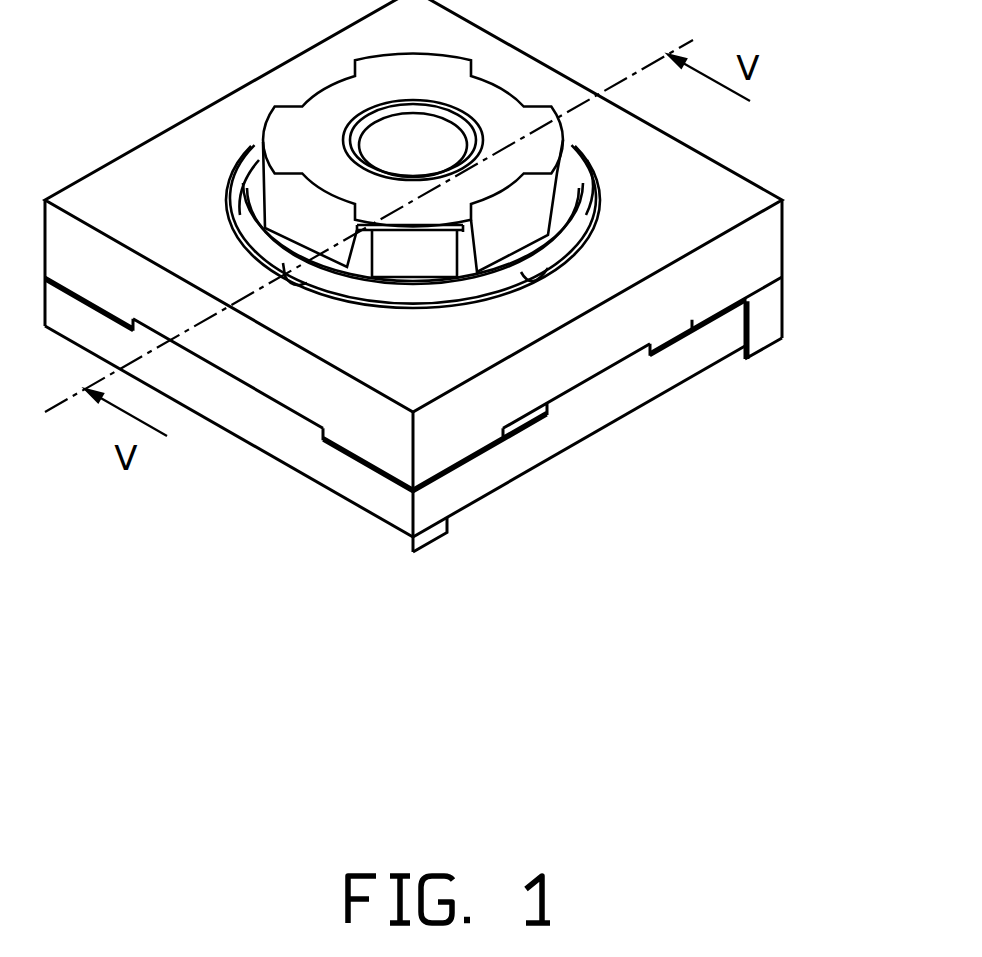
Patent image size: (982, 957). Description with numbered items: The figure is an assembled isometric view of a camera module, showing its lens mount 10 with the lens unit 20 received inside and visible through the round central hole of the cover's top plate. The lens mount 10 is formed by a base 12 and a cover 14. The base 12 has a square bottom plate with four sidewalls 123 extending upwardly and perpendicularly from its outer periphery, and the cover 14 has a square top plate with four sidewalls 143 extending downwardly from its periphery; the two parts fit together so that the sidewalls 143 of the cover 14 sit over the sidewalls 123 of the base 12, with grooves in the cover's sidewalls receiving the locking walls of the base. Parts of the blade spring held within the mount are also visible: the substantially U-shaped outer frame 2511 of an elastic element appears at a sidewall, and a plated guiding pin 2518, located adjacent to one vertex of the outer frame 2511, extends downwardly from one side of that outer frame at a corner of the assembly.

The lens mount 10 is at (190, 536).
The base 12 is at (413, 449).
The cover 14 is at (473, 271).
The lens unit 20 is at (318, 140).
The sidewalls 123 is at (573, 430).
The sidewalls 143 is at (657, 346).
The outer frame 2511 is at (677, 340).
The plated guiding pin 2518 is at (427, 527).